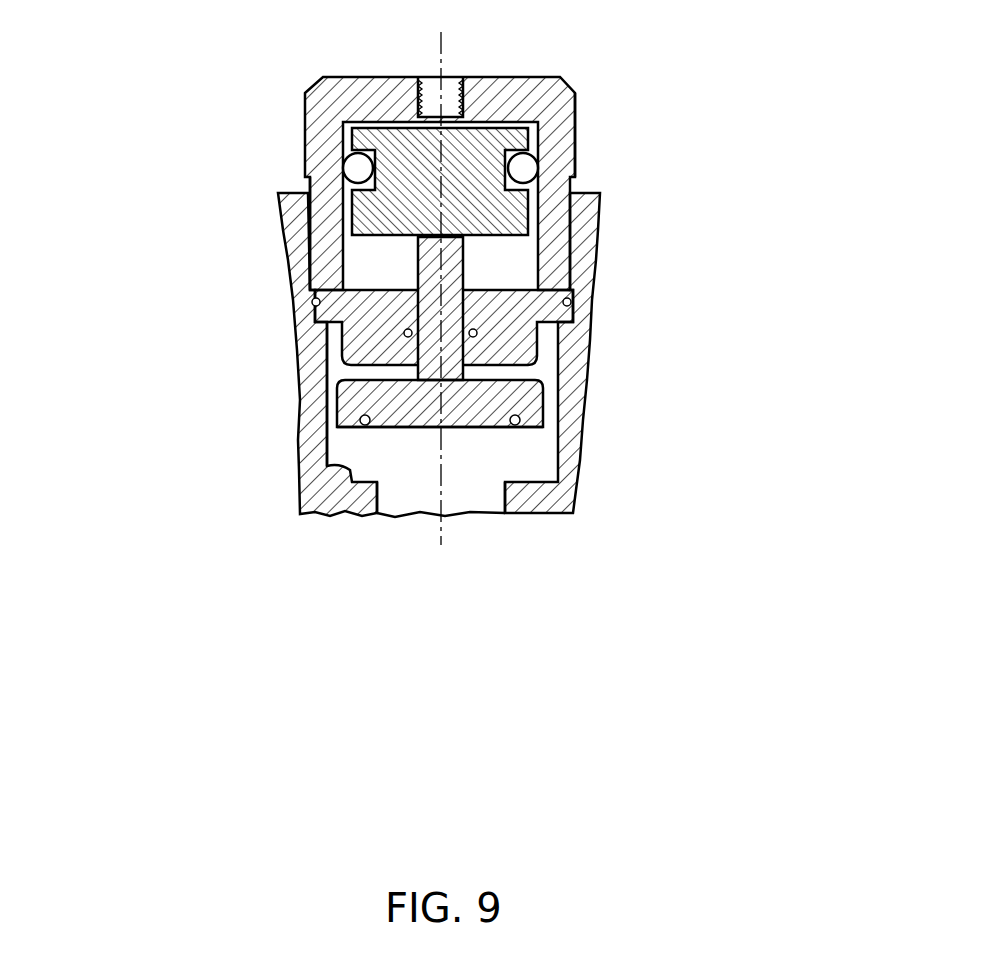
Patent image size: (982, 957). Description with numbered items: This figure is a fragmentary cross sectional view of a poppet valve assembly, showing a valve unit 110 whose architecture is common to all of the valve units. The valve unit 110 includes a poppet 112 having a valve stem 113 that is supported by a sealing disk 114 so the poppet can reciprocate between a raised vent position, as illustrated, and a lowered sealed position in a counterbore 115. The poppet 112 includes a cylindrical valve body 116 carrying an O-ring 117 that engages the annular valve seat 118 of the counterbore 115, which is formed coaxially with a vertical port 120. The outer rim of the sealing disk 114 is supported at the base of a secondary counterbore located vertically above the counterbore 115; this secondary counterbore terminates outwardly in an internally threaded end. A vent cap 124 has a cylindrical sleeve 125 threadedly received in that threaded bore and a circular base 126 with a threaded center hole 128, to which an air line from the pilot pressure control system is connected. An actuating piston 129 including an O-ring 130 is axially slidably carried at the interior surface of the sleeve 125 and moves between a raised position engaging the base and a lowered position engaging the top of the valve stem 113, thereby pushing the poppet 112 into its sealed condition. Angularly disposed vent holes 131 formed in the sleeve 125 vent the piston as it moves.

The valve unit 110 is at (210, 128).
The poppet 112 is at (530, 407).
The valve stem 113 is at (467, 262).
The sealing disk 114 is at (527, 347).
The counterbore 115 is at (335, 362).
The cylindrical valve body 116 is at (347, 436).
The O-ring 117 is at (520, 423).
The annular valve seat 118 is at (300, 468).
The vertical port 120 is at (457, 507).
The vent cap 124 is at (583, 135).
The cylindrical sleeve 125 is at (577, 167).
The circular base 126 is at (513, 78).
The threaded center hole 128 is at (437, 97).
The actuating piston 129 is at (527, 218).
The O-ring 130 is at (303, 127).
The vent holes 131 is at (307, 183).